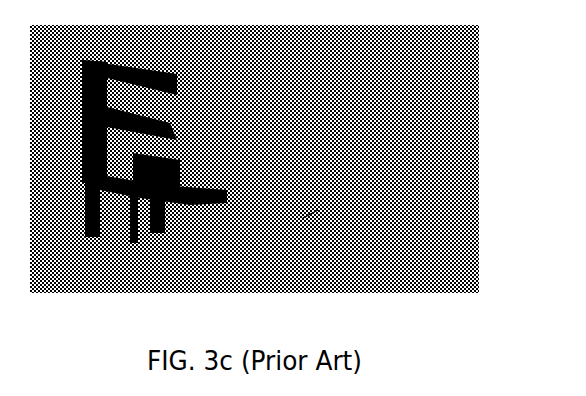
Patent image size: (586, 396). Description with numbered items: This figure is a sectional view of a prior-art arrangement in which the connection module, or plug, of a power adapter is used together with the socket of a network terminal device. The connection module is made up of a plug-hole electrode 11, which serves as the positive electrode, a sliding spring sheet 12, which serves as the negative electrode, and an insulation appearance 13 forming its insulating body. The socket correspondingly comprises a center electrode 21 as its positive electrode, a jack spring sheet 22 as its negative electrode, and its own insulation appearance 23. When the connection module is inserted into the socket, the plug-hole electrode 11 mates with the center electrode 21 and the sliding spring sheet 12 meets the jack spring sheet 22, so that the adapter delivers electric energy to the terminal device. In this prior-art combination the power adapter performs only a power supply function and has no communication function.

The plug-hole electrode 11 is at (197, 111).
The sliding spring sheet 12 is at (203, 92).
The insulation appearance 13 is at (220, 70).
The center electrode 21 is at (180, 130).
The jack spring sheet 22 is at (173, 150).
The insulation appearance 23 is at (222, 180).